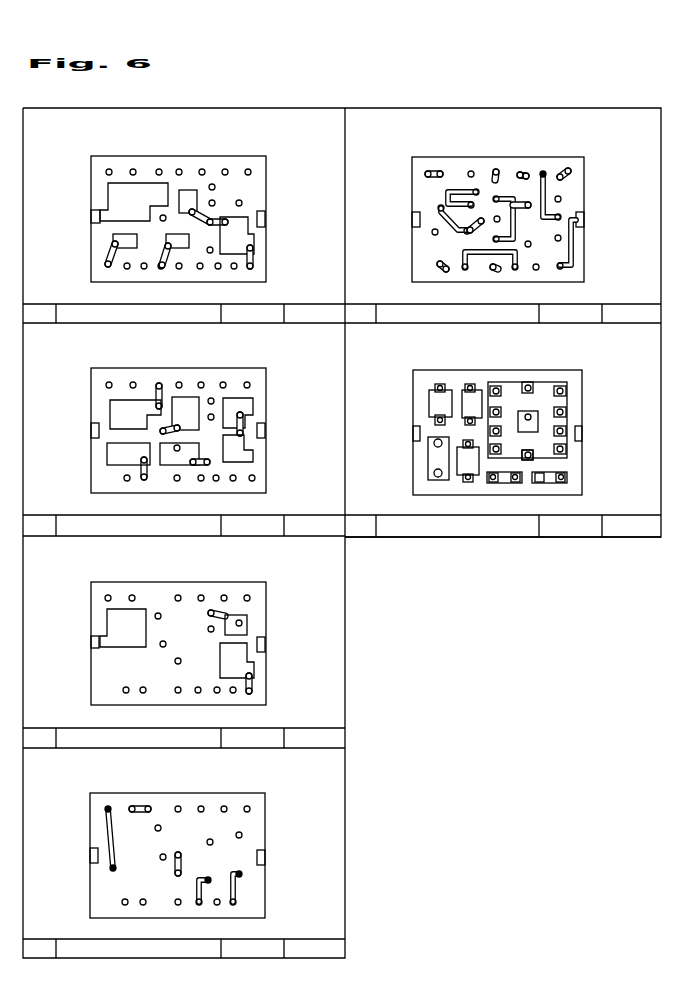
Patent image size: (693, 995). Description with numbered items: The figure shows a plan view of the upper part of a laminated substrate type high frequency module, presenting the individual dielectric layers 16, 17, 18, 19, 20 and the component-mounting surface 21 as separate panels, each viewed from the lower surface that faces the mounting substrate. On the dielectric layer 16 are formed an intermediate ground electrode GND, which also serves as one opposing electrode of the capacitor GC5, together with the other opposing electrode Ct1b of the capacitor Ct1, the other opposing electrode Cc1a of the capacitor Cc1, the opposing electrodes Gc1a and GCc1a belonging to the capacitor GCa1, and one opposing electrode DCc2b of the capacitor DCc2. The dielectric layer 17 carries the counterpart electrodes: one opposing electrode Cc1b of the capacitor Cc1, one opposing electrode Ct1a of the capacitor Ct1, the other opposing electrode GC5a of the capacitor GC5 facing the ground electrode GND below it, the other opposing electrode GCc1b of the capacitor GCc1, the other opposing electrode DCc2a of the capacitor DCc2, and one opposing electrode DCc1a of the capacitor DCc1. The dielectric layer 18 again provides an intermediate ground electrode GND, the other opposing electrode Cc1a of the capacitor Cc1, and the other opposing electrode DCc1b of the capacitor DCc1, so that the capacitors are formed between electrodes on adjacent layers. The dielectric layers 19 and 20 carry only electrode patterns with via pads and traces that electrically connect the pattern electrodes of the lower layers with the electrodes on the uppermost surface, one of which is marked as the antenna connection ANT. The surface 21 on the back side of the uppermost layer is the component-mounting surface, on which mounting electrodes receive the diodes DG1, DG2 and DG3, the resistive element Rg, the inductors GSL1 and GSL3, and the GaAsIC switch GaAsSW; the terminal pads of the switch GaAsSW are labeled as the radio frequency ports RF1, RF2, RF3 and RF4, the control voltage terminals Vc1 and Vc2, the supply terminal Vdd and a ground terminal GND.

The dielectric layer 16 is at (169, 228).
The dielectric layer 17 is at (173, 442).
The dielectric layer 18 is at (113, 618).
The dielectric layer 19 is at (147, 876).
The dielectric layer 20 is at (468, 240).
The dielectric layer 21 is at (487, 442).
The intermediate ground electrode GND is at (115, 189).
The opposing electrode of capacitor Ct1 Ct1b is at (182, 197).
The opposing electrode of capacitor GCa1 Gc1a is at (249, 233).
The opposing electrode of capacitor GCa1 GCc1a is at (112, 237).
The opposing electrode of capacitor DCc2 DCc2b is at (182, 248).
The opposing electrode of capacitor GC5 GC5a is at (127, 405).
The opposing electrode of capacitor Ct1 Ct1a is at (188, 403).
The opposing electrode of capacitor DCc1 DCc1a is at (248, 402).
The opposing electrode of capacitor Cc1 Cc1b is at (248, 457).
The opposing electrode of capacitor GCc1 GCc1b is at (113, 452).
The opposing electrode of capacitor DCc2 DCc2a is at (170, 463).
The opposing electrode of capacitor DCc1 DCc1b is at (248, 618).
The opposing electrode of capacitor Cc1 Cc1a is at (252, 663).
The antenna terminal ANT is at (252, 694).
The diode DG2 is at (435, 402).
The diode DG3 is at (469, 385).
The diode DG1 is at (460, 470).
The inductor GSL3 is at (437, 463).
The inductor GSL1 is at (502, 480).
The resistive element Rg is at (545, 480).
The GaAsIC switch GaAsSW is at (547, 380).
The RF1 terminal RF1 is at (565, 412).
The RF2 terminal RF2 is at (497, 411).
The RF3 terminal RF3 is at (497, 392).
The RF4 terminal RF4 is at (528, 385).
The control voltage terminal Vc1 is at (562, 448).
The control voltage terminal Vc2 is at (565, 432).
The supply voltage terminal Vdd is at (532, 455).